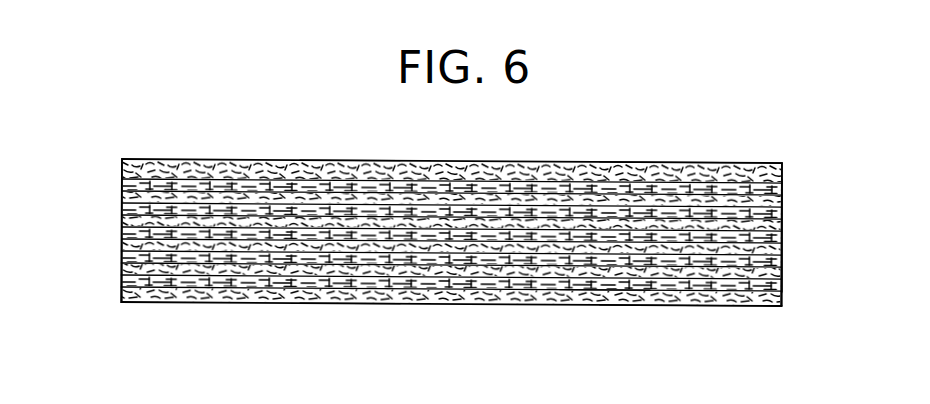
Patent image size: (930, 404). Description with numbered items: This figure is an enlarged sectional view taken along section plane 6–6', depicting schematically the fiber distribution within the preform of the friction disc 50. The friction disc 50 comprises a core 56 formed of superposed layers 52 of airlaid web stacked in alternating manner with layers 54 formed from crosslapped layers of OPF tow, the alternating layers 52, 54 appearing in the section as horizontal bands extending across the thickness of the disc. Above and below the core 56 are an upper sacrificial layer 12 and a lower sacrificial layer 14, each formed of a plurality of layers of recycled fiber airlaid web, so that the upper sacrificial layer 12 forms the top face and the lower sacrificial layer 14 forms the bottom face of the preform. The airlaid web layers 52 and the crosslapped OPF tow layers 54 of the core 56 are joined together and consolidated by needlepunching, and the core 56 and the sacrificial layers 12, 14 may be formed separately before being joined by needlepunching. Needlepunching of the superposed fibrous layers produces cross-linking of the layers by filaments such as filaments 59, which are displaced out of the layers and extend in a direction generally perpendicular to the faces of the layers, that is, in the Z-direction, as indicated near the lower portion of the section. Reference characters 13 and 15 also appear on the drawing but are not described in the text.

The section plane line 6 is at (120, 212).
The section plane line 6' is at (781, 216).
The upper sacrificial layer 12 is at (789, 167).
The upper reinforcing layer 13 is at (337, 161).
The lower sacrificial layer 14 is at (797, 297).
The lower reinforcing layer 15 is at (323, 305).
The friction disc 50 is at (646, 130).
The layers of airlaid web 52 is at (122, 193).
The layers of crosslapped OPF tow 54 is at (122, 182).
The core 56 is at (790, 182).
The filaments 59 is at (637, 283).